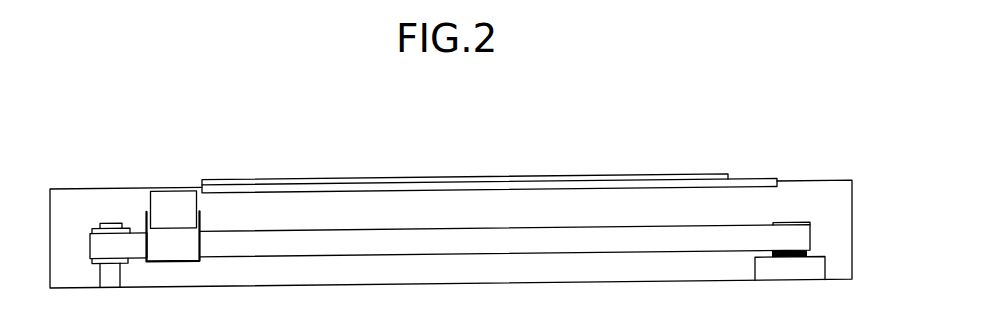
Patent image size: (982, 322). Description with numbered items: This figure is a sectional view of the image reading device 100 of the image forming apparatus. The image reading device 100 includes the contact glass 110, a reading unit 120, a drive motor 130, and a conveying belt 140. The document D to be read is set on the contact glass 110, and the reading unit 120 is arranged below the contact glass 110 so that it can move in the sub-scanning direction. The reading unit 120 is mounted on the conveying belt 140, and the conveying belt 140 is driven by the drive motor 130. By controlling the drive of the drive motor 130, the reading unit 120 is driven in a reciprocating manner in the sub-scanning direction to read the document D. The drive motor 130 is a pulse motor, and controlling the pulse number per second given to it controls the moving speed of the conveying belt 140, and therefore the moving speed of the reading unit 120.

The image reading device 100 is at (707, 155).
The contact glass 110 is at (750, 187).
The document D is at (228, 182).
The reading unit 120 is at (199, 204).
The drive motor 130 is at (762, 280).
The conveying belt 140 is at (708, 233).